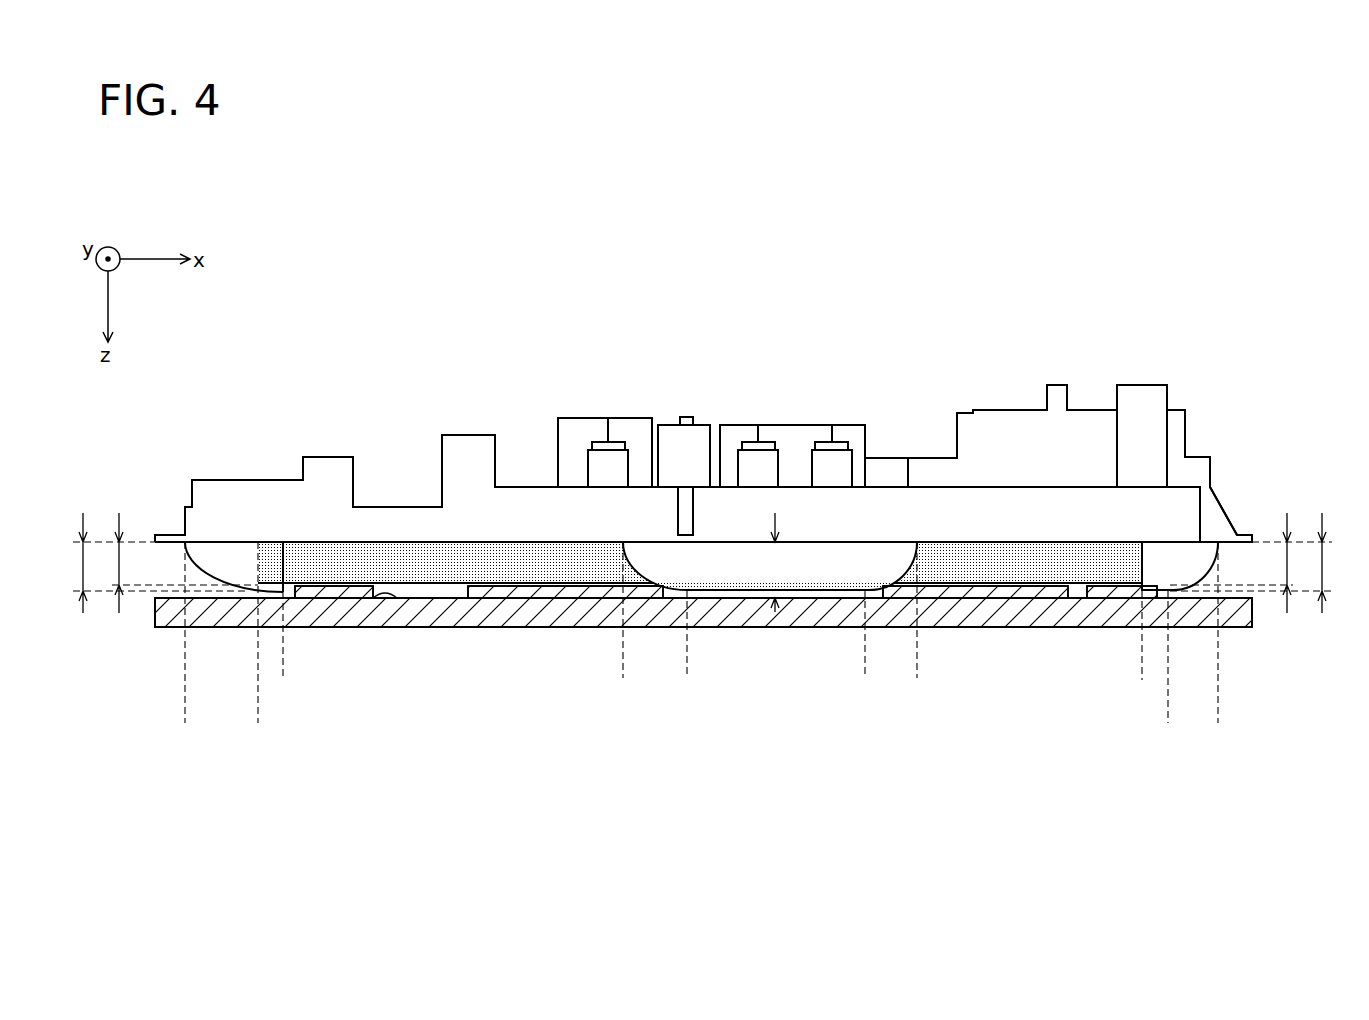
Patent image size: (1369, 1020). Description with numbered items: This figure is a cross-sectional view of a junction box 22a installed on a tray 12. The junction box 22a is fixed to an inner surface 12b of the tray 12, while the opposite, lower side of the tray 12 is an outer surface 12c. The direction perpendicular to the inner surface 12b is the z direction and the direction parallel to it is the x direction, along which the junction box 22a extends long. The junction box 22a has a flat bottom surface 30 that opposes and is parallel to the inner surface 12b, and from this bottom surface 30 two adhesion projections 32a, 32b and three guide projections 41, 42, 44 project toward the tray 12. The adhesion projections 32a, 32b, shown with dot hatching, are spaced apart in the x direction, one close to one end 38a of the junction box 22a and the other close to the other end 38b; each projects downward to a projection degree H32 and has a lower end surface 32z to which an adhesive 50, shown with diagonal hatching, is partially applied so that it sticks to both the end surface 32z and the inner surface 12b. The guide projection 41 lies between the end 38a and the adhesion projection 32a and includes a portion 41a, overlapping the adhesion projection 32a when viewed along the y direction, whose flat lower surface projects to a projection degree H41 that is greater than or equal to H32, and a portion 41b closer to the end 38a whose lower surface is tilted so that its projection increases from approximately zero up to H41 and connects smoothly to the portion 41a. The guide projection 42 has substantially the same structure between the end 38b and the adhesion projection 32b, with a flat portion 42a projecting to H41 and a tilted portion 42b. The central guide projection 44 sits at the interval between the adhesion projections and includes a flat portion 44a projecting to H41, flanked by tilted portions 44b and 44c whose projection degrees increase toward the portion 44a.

The tray 12 is at (682, 663).
The inner surface 12b is at (367, 598).
The outer surface 12c is at (430, 628).
The junction box 22a is at (466, 345).
The bottom surface 30 is at (470, 562).
The adhesion projection 32a is at (417, 574).
The adhesion projection 32b is at (1040, 574).
The end surface 32z is at (450, 588).
The end 38a is at (183, 517).
The end 38b is at (1210, 470).
The guide projection 41 is at (249, 669).
The portion 41a is at (228, 677).
The portion 41b is at (248, 707).
The guide projection 42 is at (1170, 670).
The portion 42a is at (1178, 681).
The portion 42b is at (1198, 646).
The guide projection 44 is at (770, 651).
The portion 44a is at (778, 651).
The portion 44b is at (677, 681).
The portion 44c is at (891, 627).
The adhesive 50 is at (333, 600).
The projection degree H32 is at (118, 563).
The projection degree H41 is at (82, 573).